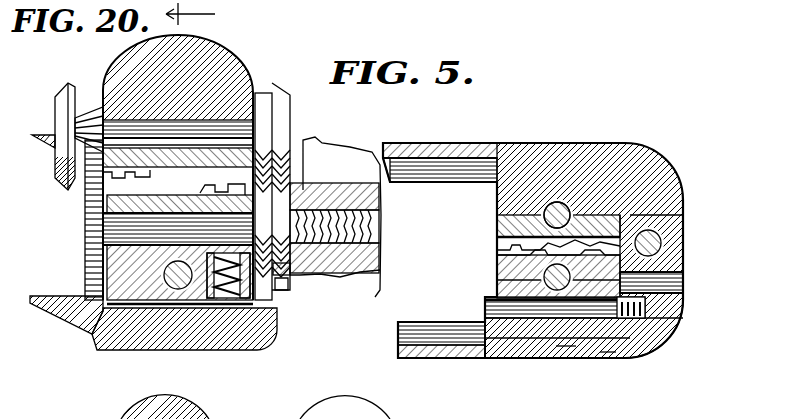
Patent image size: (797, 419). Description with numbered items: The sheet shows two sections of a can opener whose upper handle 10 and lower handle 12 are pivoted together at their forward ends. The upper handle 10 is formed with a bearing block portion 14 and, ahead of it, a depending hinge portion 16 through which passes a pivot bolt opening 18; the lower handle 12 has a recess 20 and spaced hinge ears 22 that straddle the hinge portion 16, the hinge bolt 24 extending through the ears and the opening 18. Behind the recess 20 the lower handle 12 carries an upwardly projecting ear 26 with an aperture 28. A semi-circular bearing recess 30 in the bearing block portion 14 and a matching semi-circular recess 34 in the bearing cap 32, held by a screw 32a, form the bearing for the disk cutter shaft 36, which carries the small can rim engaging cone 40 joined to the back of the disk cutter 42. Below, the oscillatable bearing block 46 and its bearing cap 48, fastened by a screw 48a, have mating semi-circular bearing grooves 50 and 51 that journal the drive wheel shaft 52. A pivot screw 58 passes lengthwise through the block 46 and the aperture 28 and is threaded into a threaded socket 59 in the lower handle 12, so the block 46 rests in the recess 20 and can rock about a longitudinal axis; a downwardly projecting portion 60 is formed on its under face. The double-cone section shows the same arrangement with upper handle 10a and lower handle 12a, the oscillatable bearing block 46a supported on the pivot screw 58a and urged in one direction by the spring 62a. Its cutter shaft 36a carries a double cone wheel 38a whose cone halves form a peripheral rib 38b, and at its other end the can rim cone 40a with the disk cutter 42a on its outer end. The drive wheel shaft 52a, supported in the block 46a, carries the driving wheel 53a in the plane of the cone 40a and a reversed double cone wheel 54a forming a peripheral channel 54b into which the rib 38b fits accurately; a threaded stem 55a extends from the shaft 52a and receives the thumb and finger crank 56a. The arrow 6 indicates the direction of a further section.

In FIG. 20, the section arrow 6 is at (198, 14).
In FIG. 20, the upper handle 10 is at (183, 396).
In FIG. 5, the upper handle 10 is at (430, 145).
In FIG. 20, the upper handle 10a is at (216, 52).
In FIG. 5, the lower handle 12 is at (403, 361).
In FIG. 20, the lower handle 12a is at (112, 348).
In FIG. 5, the bearing block portion 14 is at (505, 201).
In FIG. 5, the hinge portion 16 is at (680, 263).
In FIG. 5, the pivot bolt opening 18 is at (676, 223).
In FIG. 5, the recess 20 is at (652, 347).
In FIG. 5, the hinge ears 22 is at (683, 288).
In FIG. 5, the hinge bolt 24 is at (681, 242).
In FIG. 5, the ear 26 is at (486, 299).
In FIG. 5, the aperture 28 is at (486, 360).
In FIG. 5, the semi-circular bearing recess 30 is at (553, 201).
In FIG. 5, the bearing cap 32 is at (498, 226).
In FIG. 5, the screw 32a is at (640, 213).
In FIG. 5, the semi-circular recess 34 is at (630, 154).
In FIG. 20, the disk cutter shaft 36 is at (122, 418).
In FIG. 5, the disk cutter shaft 36 is at (568, 210).
In FIG. 20, the cutter shaft 36a is at (128, 128).
In FIG. 20, the double cone wheel 38a is at (265, 92).
In FIG. 20, the peripheral rib 38b is at (274, 105).
In FIG. 20, the can rim engaging cone 40 is at (81, 411).
In FIG. 20, the can rim cone 40a is at (88, 114).
In FIG. 20, the disk cutter 42 is at (53, 411).
In FIG. 20, the disk cutter 42a is at (62, 112).
In FIG. 5, the bearing block 46 is at (600, 346).
In FIG. 20, the oscillatable bearing block 46a is at (108, 308).
In FIG. 5, the bearing cap 48 is at (512, 271).
In FIG. 5, the screw 48a is at (497, 249).
In FIG. 5, the semi-circular bearing groove 50 is at (535, 346).
In FIG. 5, the semi-circular bearing groove 51 is at (497, 257).
In FIG. 5, the drive wheel shaft 52 is at (566, 346).
In FIG. 20, the drive wheel shaft 52a is at (122, 228).
In FIG. 20, the driving wheel 53a is at (86, 224).
In FIG. 20, the double cone wheel 54a is at (288, 291).
In FIG. 20, the peripheral channel 54b is at (288, 268).
In FIG. 20, the threaded stem 55a is at (366, 234).
In FIG. 20, the thumb and finger crank 56a is at (328, 165).
In FIG. 5, the pivot screw 58 is at (512, 300).
In FIG. 20, the pivot screw 58a is at (185, 290).
In FIG. 5, the threaded socket 59 is at (652, 311).
In FIG. 5, the downwardly projecting portion 60 is at (608, 352).
In FIG. 20, the spring 62a is at (247, 300).